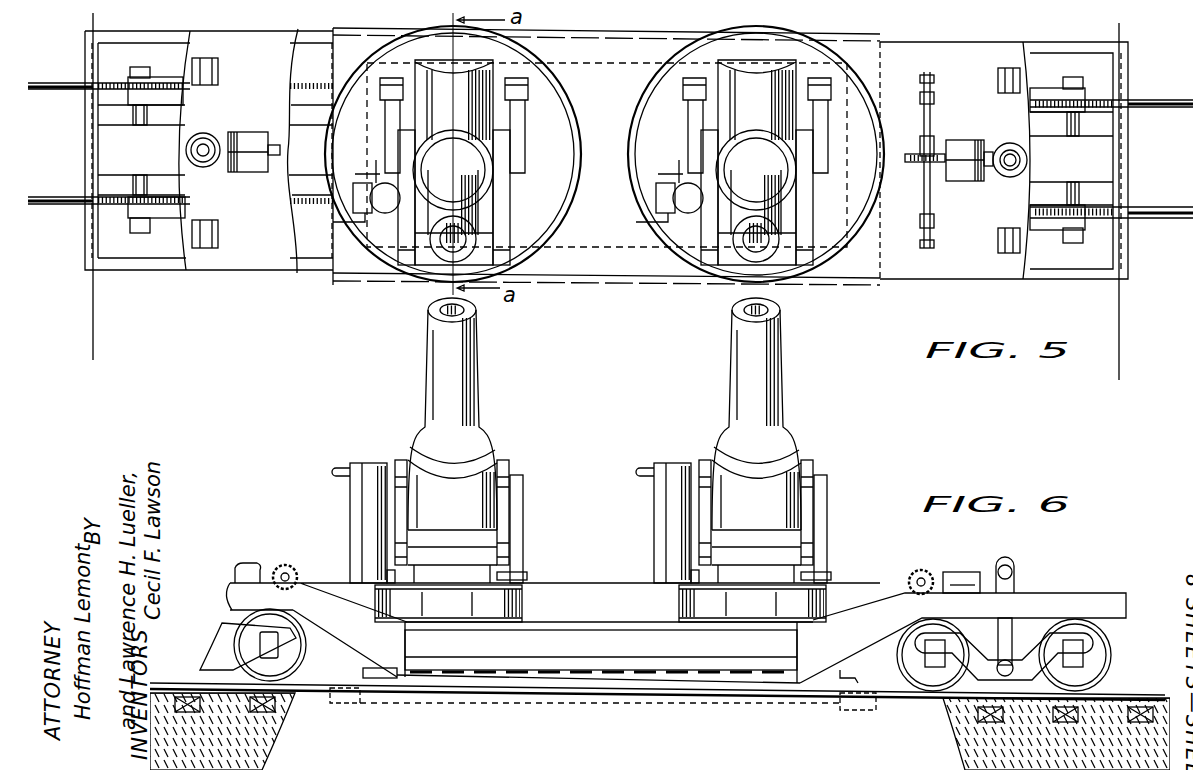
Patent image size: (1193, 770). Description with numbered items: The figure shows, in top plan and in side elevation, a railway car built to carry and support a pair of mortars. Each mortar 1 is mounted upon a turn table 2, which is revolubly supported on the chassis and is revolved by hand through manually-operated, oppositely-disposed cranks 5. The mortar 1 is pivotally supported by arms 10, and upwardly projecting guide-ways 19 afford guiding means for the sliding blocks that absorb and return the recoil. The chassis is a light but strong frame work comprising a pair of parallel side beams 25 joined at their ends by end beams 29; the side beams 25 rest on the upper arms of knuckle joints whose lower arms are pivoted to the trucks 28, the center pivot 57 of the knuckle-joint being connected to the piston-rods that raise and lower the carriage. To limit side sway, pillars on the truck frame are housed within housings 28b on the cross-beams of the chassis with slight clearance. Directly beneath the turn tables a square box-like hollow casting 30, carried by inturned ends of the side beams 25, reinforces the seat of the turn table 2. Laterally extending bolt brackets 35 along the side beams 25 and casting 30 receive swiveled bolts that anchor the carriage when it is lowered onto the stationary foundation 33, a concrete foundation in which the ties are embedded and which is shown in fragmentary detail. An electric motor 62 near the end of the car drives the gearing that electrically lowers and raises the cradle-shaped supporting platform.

In FIG. 5, the mortar 1 is at (480, 215).
In FIG. 6, the mortar 1 is at (462, 388).
In FIG. 5, the turn table 2 is at (640, 143).
In FIG. 6, the turn table 2 is at (600, 603).
In FIG. 5, the cranks 5 is at (650, 228).
In FIG. 6, the cranks 5 is at (340, 470).
In FIG. 5, the arms 10 is at (505, 188).
In FIG. 6, the arms 10 is at (702, 503).
In FIG. 5, the guide-ways 19 is at (515, 135).
In FIG. 5, the side beams 25 is at (313, 42).
In FIG. 6, the side beams 25 is at (676, 633).
In FIG. 5, the trucks 28 is at (1053, 95).
In FIG. 6, the trucks 28 is at (1095, 645).
In FIG. 5, the housings 28b is at (1012, 178).
In FIG. 5, the end beams 29 is at (84, 150).
In FIG. 6, the hollow casting 30 is at (368, 668).
In FIG. 5, the stationary foundation 33 is at (90, 310).
In FIG. 6, the stationary foundation 33 is at (237, 742).
In FIG. 5, the bolt brackets 35 is at (640, 284).
In FIG. 6, the bolt brackets 35 is at (555, 668).
In FIG. 6, the center pivot 57 is at (1005, 626).
In FIG. 5, the electric motor 62 is at (247, 157).
In FIG. 6, the electric motor 62 is at (962, 572).